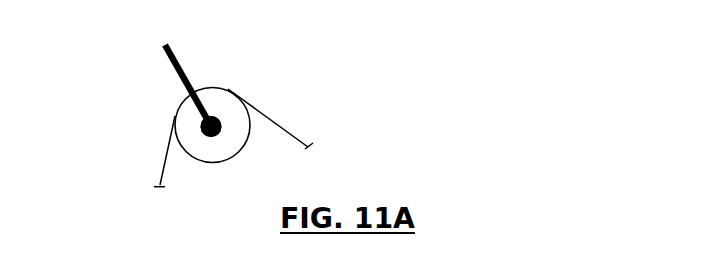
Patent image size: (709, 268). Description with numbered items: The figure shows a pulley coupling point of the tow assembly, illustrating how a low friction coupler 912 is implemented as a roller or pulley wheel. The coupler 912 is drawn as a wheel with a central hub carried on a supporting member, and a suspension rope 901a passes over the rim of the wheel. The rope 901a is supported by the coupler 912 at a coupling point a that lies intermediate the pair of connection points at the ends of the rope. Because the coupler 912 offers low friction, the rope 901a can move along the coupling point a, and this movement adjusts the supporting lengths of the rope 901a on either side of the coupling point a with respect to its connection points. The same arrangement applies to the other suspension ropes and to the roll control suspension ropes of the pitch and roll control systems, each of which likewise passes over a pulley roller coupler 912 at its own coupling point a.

The coupler 912 is at (185, 118).
The first suspension rope 901a is at (272, 120).
The first coupling point a is at (222, 105).